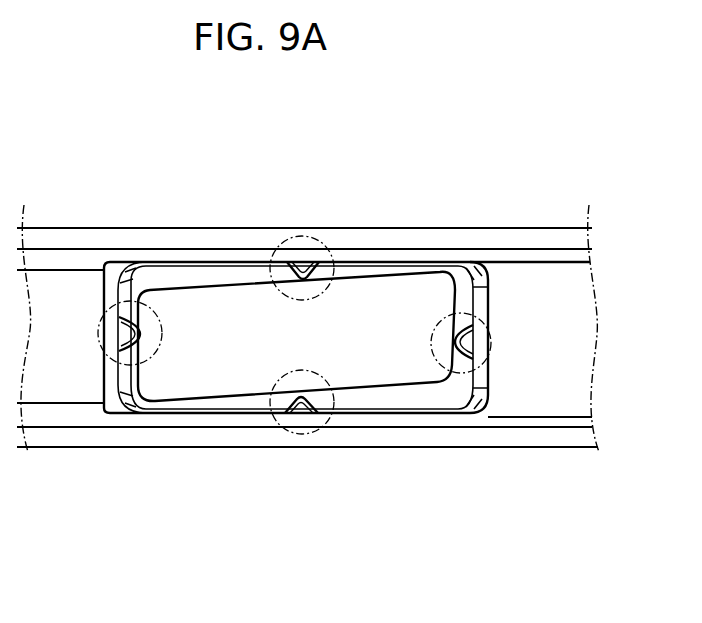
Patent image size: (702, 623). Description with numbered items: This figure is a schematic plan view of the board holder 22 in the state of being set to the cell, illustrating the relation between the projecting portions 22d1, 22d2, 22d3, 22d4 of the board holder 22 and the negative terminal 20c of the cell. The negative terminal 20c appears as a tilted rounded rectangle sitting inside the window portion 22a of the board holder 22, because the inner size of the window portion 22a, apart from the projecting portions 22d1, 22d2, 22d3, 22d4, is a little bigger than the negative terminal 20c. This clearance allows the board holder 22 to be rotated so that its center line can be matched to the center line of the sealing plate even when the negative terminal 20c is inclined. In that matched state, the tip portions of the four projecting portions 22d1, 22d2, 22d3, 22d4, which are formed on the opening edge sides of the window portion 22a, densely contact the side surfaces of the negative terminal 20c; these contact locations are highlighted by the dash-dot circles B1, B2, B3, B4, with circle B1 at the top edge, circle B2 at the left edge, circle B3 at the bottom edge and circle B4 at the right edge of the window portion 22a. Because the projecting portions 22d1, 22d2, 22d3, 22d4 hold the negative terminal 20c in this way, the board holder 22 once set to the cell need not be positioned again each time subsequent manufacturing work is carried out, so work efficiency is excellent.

The negative terminal 20c is at (405, 290).
The board holder 22 is at (492, 260).
The window portion 22a is at (383, 403).
The projecting portion 22d1 is at (297, 285).
The projecting portion 22d2 is at (136, 348).
The projecting portion 22d3 is at (303, 390).
The projecting portion 22d4 is at (458, 343).
The circle B1 is at (302, 240).
The circle B2 is at (113, 362).
The circle B3 is at (288, 437).
The circle B4 is at (498, 343).